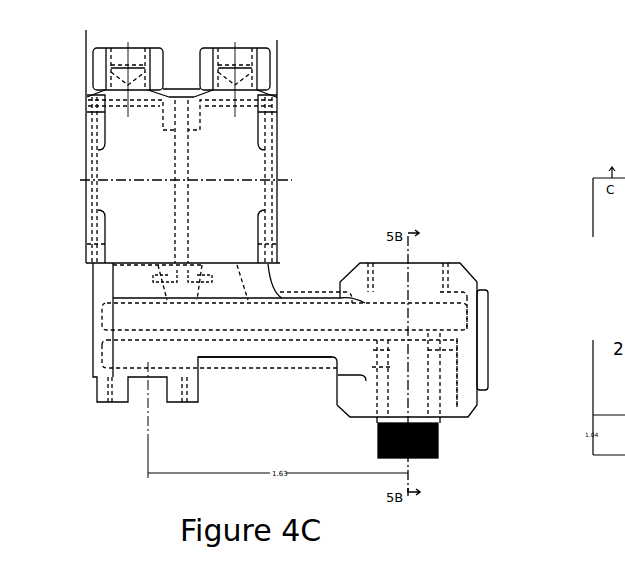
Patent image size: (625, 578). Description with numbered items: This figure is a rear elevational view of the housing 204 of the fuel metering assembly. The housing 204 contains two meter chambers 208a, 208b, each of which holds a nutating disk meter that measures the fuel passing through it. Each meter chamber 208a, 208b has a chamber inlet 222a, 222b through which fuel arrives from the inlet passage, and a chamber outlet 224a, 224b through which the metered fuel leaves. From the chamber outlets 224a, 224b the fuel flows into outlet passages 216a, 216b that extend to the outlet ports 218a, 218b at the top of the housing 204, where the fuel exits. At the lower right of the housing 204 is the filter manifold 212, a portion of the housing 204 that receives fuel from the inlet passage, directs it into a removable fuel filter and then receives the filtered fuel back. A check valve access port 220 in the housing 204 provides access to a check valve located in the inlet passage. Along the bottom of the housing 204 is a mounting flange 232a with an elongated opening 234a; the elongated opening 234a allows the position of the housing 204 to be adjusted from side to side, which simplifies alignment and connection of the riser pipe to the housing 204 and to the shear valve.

The housing 204 is at (98, 337).
The meter chamber 208a is at (117, 157).
The meter chamber 208b is at (233, 147).
The filter manifold 212 is at (467, 387).
The outlet passage 216a is at (138, 71).
The outlet passage 216b is at (247, 70).
The outlet port 218a is at (128, 52).
The outlet port 218b is at (222, 46).
The check valve access port 220 is at (430, 262).
The chamber inlet 222a is at (135, 265).
The chamber inlet 222b is at (238, 267).
The chamber outlet 224a is at (120, 108).
The chamber outlet 224b is at (248, 104).
The mounting flange 232a is at (206, 372).
The elongated opening 234a is at (292, 0).